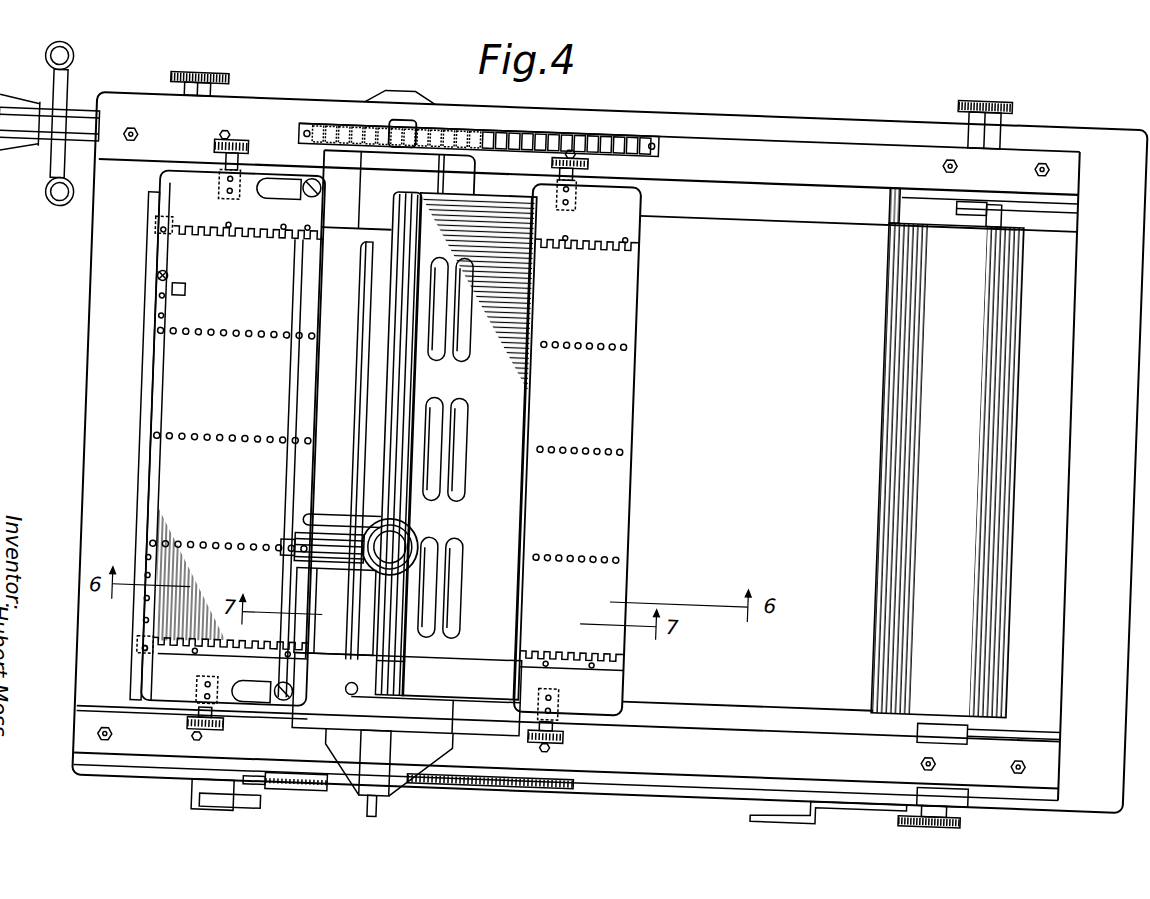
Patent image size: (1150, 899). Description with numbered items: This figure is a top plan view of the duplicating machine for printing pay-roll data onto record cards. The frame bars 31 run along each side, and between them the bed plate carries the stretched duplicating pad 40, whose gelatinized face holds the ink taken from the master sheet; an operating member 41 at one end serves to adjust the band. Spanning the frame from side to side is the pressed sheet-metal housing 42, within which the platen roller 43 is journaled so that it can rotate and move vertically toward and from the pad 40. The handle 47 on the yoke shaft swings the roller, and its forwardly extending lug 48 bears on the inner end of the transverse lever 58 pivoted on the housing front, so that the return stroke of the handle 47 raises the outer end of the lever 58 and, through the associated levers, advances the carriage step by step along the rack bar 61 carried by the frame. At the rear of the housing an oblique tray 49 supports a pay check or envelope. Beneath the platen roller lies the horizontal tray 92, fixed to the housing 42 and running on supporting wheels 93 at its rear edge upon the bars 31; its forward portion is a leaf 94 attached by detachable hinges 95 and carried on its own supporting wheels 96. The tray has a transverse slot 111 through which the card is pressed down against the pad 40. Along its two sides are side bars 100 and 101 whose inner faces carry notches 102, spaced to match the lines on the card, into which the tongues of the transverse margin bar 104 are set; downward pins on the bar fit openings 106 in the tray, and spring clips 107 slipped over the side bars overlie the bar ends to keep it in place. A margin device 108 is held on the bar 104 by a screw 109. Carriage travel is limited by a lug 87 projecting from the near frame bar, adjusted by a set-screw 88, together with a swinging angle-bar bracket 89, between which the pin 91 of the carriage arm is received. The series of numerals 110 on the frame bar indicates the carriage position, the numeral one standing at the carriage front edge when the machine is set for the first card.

The frame bars 31 is at (751, 124).
The duplicating pad 40 is at (786, 200).
The operating member 41 is at (79, 129).
The housing 42 is at (346, 384).
The platen roller 43 is at (405, 637).
The handle 47 is at (367, 556).
The lug 48 is at (320, 517).
The tray 49 is at (519, 482).
The lever 58 is at (317, 616).
The rack bar 61 is at (491, 756).
The lug 87 is at (791, 798).
The set-screw 88 is at (961, 791).
The bracket 89 is at (276, 799).
The pin 91 is at (406, 792).
The tray 92 is at (307, 278).
The supporting wheels 93 is at (592, 145).
The leaf 94 is at (188, 372).
The hinges 95 is at (291, 178).
The supporting wheels 96 is at (230, 142).
The side bar 100 is at (202, 647).
The side bar 101 is at (645, 218).
The notches 102 is at (612, 229).
The margin bar 104 is at (164, 485).
The openings 106 is at (258, 327).
The spring clips 107 is at (162, 220).
The margin device 108 is at (185, 285).
The screw 109 is at (168, 268).
The series of numerals 110 is at (521, 115).
The transverse slot 111 is at (421, 664).